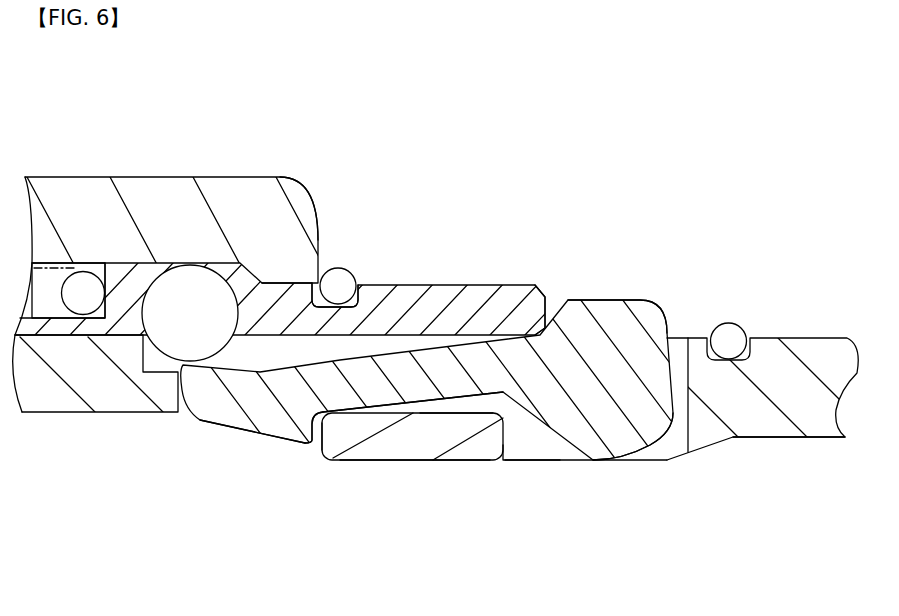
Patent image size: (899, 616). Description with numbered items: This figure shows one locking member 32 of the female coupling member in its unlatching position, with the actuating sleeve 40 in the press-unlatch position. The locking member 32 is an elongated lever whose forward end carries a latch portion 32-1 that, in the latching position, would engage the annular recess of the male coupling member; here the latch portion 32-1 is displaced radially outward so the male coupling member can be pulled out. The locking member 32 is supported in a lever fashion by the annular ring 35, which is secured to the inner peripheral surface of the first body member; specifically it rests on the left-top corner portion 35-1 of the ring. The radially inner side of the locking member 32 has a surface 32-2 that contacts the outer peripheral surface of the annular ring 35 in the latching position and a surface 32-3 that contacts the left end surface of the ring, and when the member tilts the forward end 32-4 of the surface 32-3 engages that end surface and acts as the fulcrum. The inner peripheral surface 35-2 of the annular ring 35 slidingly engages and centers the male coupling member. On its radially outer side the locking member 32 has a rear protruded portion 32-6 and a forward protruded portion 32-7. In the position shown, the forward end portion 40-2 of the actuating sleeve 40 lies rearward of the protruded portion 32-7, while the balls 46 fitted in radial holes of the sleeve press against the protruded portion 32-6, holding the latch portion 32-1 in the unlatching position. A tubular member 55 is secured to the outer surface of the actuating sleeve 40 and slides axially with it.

The tubular member 55 is at (118, 177).
The balls 46 is at (193, 317).
The protruded portion 32-6 is at (272, 308).
The actuating sleeve 40 is at (387, 307).
The locking member 32 is at (420, 371).
The forward end portion 40-2 is at (513, 290).
The protruded portion 32-7 is at (608, 313).
The latch portion 32-1 is at (633, 440).
The surface 32-2 is at (427, 398).
The annular ring 35 is at (407, 448).
The inner peripheral surface 35-2 is at (370, 462).
The left-top corner portion 35-1 is at (333, 422).
The forward end 32-4 is at (313, 438).
The surface 32-3 is at (290, 440).